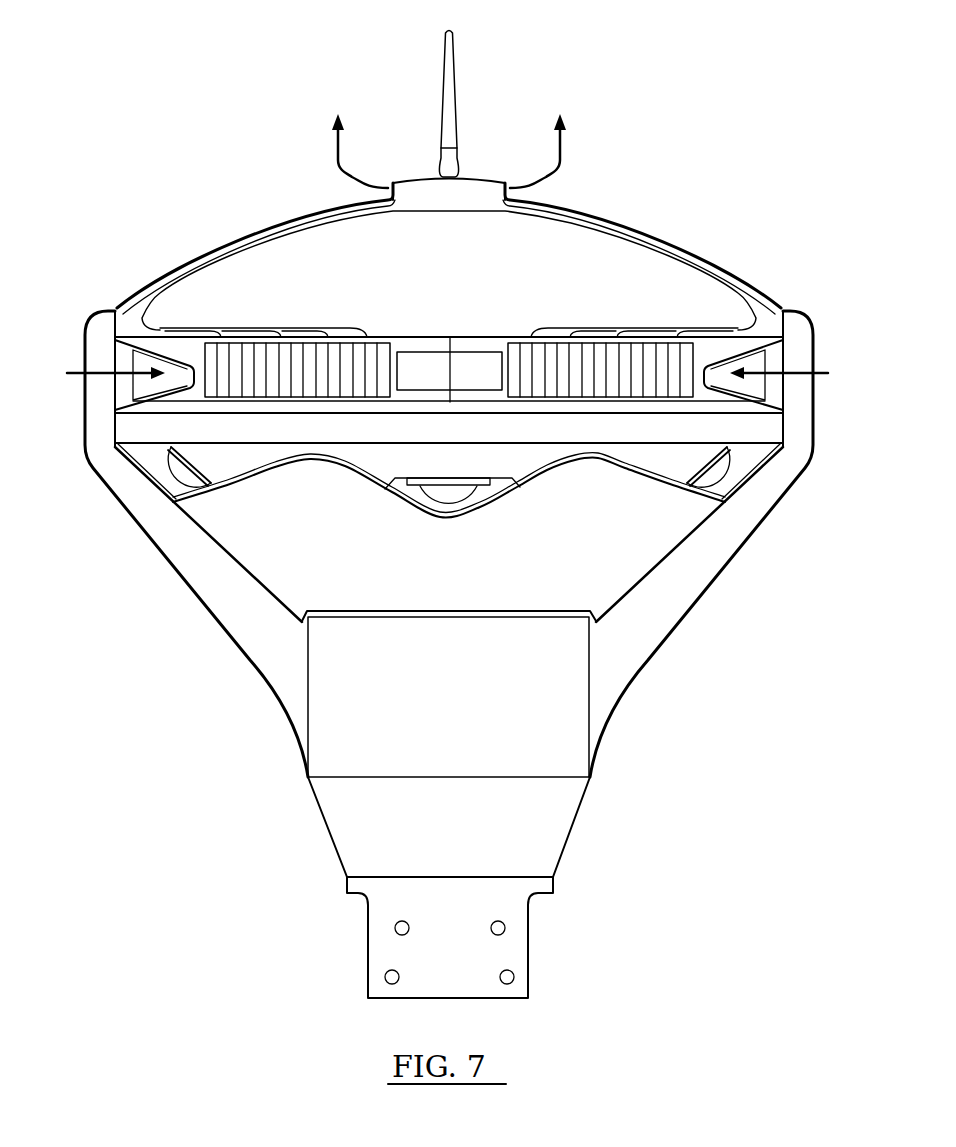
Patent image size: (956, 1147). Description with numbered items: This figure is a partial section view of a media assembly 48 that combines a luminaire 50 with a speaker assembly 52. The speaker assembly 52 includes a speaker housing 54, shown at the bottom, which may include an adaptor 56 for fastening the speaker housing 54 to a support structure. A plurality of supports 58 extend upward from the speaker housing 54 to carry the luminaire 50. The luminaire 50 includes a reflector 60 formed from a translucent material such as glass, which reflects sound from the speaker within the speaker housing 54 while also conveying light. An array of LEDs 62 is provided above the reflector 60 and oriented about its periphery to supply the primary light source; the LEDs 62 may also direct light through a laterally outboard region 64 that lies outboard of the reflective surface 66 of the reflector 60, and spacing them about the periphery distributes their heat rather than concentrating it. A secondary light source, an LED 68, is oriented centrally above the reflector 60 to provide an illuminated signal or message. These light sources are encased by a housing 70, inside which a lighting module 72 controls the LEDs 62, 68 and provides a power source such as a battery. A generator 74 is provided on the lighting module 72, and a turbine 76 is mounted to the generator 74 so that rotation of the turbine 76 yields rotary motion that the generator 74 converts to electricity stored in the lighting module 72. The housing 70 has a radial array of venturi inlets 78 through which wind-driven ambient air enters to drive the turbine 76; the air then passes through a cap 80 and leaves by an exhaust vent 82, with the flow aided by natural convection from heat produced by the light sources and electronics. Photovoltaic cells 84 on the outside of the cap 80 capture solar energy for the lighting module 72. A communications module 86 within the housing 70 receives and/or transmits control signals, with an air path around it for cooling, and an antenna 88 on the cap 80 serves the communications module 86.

The media assembly 48 is at (183, 64).
The luminaire 50 is at (171, 509).
The speaker assembly 52 is at (303, 778).
The speaker housing 54 is at (308, 707).
The adaptor 56 is at (368, 945).
The supports 58 is at (213, 613).
The reflector 60 is at (273, 472).
The LEDs 62 is at (165, 499).
The laterally outboard region 64 is at (126, 463).
The reflective surface 66 is at (308, 475).
The LED 68 is at (449, 501).
The housing 70 is at (105, 413).
The lighting module 72 is at (130, 428).
The generator 74 is at (427, 353).
The turbine 76 is at (115, 338).
The venturi inlets 78 is at (720, 393).
The cap 80 is at (138, 285).
The exhaust vent 82 is at (384, 186).
The photovoltaic cells 84 is at (703, 250).
The communications module 86 is at (213, 278).
The antenna 88 is at (440, 112).